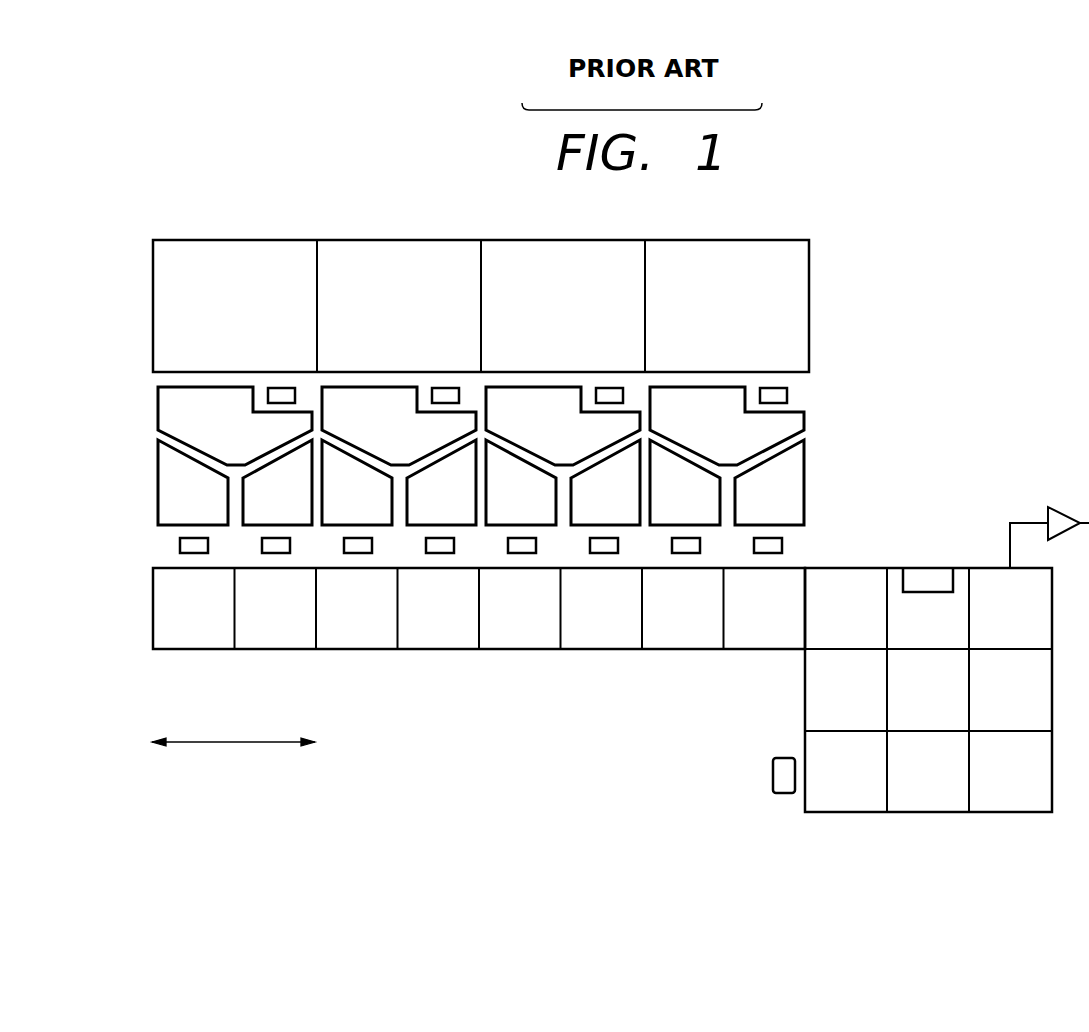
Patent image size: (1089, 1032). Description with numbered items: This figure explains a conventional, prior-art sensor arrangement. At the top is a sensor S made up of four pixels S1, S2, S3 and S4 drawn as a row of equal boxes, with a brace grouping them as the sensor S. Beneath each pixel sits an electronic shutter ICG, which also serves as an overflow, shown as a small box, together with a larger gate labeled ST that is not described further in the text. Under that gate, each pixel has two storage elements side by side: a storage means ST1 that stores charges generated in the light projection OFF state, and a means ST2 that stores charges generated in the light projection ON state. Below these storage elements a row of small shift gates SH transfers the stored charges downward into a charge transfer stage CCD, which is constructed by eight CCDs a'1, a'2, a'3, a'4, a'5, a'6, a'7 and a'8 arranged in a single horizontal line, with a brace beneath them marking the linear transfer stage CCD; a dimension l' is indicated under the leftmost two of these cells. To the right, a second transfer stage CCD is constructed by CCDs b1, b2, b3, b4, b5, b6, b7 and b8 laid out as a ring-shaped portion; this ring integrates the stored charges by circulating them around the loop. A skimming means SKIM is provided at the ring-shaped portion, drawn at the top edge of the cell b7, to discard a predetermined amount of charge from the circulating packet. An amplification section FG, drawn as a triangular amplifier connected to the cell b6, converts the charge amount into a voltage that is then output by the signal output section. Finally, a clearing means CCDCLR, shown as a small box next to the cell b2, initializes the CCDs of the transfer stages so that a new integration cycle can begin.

The sensor S is at (509, 306).
The pixel S1 is at (728, 307).
The pixel S2 is at (564, 307).
The pixel S3 is at (400, 307).
The pixel S4 is at (236, 307).
The electronic shutter ICG is at (787, 396).
The storage gate ST is at (804, 425).
The storage means ST1 is at (804, 465).
The storage means ST2 is at (690, 492).
The shift gate SH is at (782, 547).
The charge transfer stage CCD is at (605, 720).
The CCD a'1 is at (762, 608).
The CCD a'2 is at (680, 608).
The CCD a'3 is at (599, 608).
The CCD a'4 is at (517, 608).
The CCD a'5 is at (436, 608).
The CCD a'6 is at (354, 608).
The CCD a'7 is at (273, 608).
The CCD a'8 is at (191, 608).
The CCD b1 is at (846, 690).
The CCD b2 is at (846, 771).
The CCD b3 is at (928, 771).
The CCD b4 is at (1010, 771).
The CCD b5 is at (1010, 690).
The CCD b6 is at (1010, 609).
The CCD b7 is at (928, 609).
The CCD b8 is at (846, 609).
The skimming means SKIM is at (937, 579).
The amplification section FG is at (1060, 514).
The clearing means CCDCLR is at (772, 768).
The pixel pitch length l' is at (233, 729).